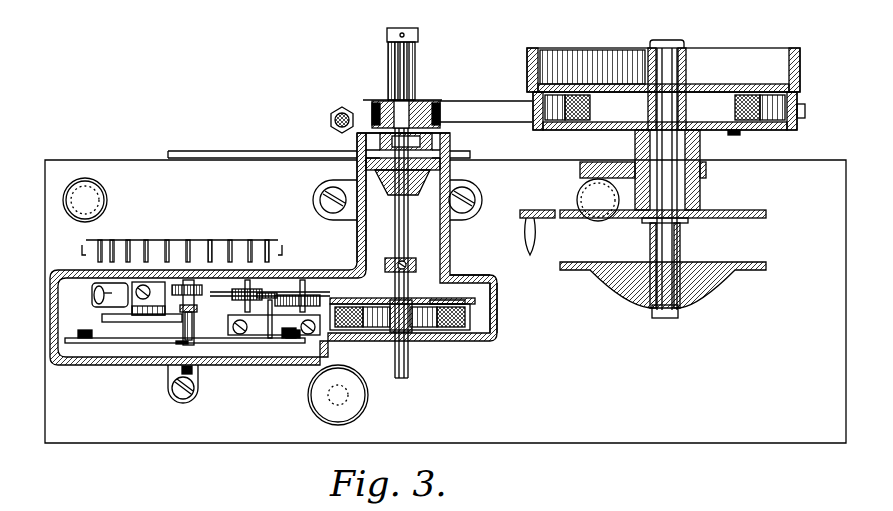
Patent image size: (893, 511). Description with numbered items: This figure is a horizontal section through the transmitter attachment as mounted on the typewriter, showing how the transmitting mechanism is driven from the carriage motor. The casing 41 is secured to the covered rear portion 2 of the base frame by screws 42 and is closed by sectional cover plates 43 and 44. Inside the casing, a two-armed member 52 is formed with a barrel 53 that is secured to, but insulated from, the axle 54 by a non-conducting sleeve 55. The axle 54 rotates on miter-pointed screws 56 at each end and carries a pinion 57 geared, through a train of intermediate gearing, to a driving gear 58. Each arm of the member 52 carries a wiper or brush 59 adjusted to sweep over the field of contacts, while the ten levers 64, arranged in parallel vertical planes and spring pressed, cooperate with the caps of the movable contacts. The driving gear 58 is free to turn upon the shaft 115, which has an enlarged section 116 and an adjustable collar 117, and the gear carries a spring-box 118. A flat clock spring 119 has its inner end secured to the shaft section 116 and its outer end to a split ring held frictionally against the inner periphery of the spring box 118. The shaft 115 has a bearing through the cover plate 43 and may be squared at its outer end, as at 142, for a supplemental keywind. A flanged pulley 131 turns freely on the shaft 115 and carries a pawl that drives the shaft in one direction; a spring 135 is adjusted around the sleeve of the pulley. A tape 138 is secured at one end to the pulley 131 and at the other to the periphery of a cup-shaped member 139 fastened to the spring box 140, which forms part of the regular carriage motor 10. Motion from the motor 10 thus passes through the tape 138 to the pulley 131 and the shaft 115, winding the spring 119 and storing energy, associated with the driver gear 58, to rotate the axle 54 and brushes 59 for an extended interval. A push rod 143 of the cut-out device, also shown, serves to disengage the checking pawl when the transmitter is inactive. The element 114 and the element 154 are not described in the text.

The covered rear portion 2 is at (445, 301).
The spring motor 10 is at (531, 48).
The casing 41 is at (356, 240).
The screws 42 is at (320, 201).
The cover plate 43 is at (478, 343).
The cover plate 44 is at (155, 366).
The two-armed member 52 is at (192, 335).
The barrel 53 is at (197, 315).
The axle 54 is at (200, 346).
The non-conducting sleeve 55 is at (190, 342).
The miter-pointed screws 56 is at (186, 284).
The pinion 57 is at (216, 268).
The driving gear 58 is at (440, 296).
The wiper or brush 59 is at (85, 350).
The levers 64 is at (166, 240).
The plate 114 is at (388, 288).
The shaft 115 is at (396, 216).
The enlarged section 116 is at (412, 330).
The adjustable collar 117 is at (409, 258).
The spring-box 118 is at (472, 322).
The flat clock spring 119 is at (472, 312).
The flanged pulley 131 is at (367, 100).
The spring 135 is at (418, 62).
The tape 138 is at (487, 102).
The cup-shaped member 139 is at (805, 113).
The spring box 140 is at (740, 134).
The squared end 142 is at (404, 380).
The push rod 143 is at (274, 146).
The knob 154 is at (118, 320).